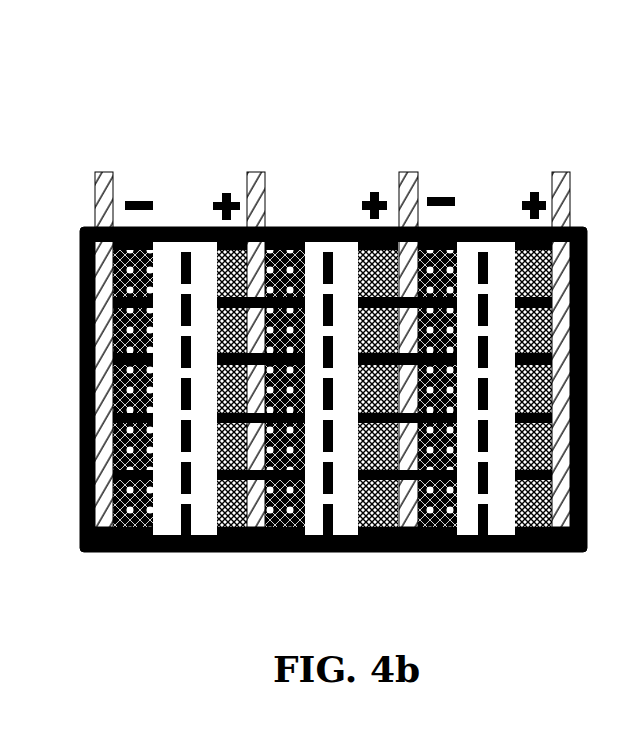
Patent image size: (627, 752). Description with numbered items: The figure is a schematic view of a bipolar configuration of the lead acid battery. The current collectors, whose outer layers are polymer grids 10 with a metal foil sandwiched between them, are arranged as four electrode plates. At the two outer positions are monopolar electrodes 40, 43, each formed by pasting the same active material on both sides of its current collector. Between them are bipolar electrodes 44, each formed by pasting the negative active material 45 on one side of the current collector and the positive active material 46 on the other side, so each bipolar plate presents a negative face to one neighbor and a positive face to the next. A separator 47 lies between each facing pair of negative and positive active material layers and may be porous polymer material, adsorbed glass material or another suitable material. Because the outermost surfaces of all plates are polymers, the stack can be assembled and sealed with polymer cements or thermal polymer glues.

The polymer grid 10 is at (98, 173).
The monopolar electrode 40 is at (127, 136).
The monopolar electrode 43 is at (550, 136).
The bipolar electrode 44 is at (258, 136).
The negative active material 45 is at (135, 510).
The positive active material 46 is at (233, 510).
The separator 47 is at (184, 250).